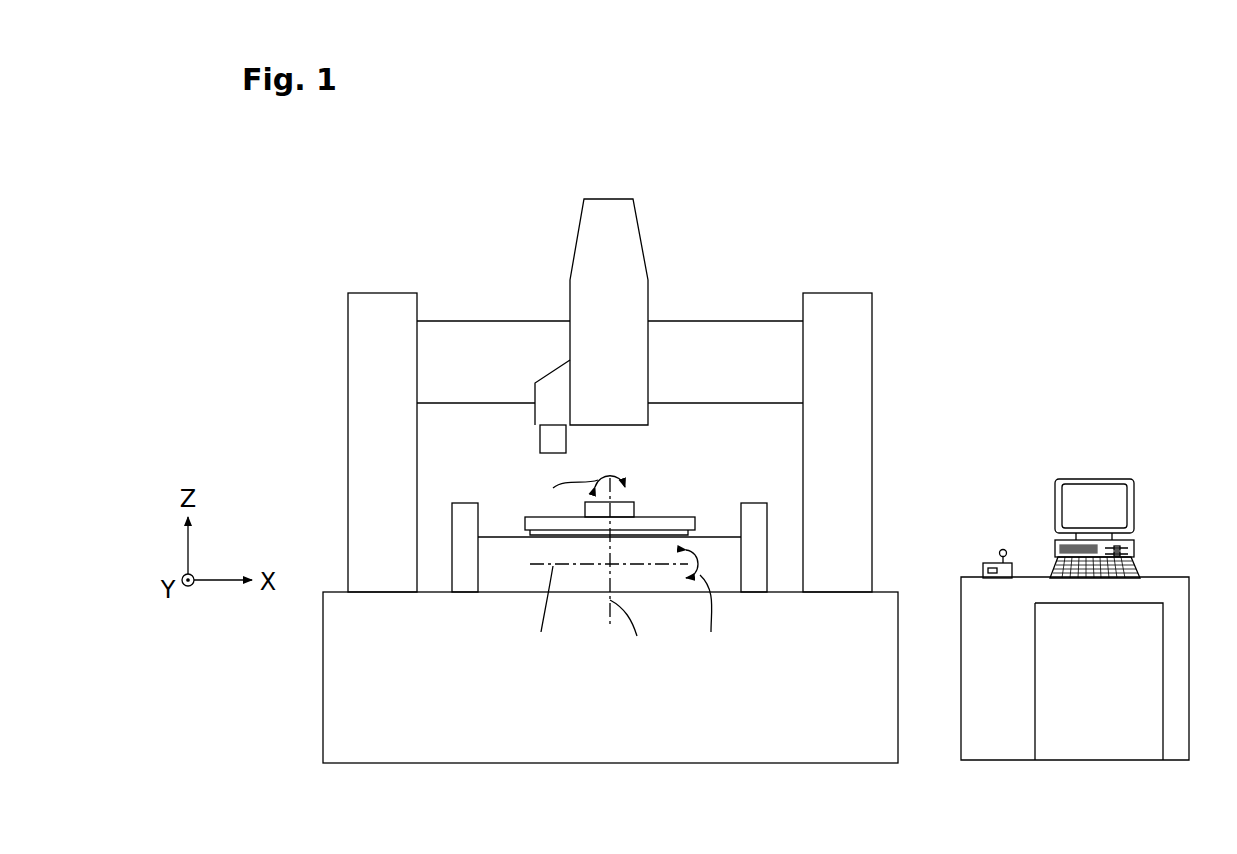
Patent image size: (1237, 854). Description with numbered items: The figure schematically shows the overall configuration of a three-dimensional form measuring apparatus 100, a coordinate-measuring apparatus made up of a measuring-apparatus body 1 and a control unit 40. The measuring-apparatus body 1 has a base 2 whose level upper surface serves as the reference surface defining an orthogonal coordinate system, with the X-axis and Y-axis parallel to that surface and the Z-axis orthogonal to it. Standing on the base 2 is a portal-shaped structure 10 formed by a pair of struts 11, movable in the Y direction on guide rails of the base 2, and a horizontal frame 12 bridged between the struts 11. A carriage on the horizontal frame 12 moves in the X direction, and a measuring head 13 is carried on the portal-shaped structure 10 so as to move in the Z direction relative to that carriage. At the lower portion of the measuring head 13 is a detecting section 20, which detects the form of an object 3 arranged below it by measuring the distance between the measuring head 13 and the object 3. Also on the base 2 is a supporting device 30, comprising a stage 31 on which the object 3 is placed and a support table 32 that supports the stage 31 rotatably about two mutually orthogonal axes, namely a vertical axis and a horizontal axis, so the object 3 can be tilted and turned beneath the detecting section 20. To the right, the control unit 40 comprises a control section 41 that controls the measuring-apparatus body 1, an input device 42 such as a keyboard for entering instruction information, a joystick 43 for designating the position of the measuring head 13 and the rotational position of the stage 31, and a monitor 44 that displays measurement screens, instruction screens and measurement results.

The three-dimensional form measuring apparatus 100 is at (977, 144).
The measuring-apparatus body 1 is at (812, 206).
The base 2 is at (338, 686).
The object 3 is at (632, 508).
The portal-shaped structure 10 is at (840, 292).
The struts 11 is at (360, 460).
The horizontal frame 12 is at (720, 330).
The measuring head 13 is at (628, 238).
The detecting section 20 is at (546, 440).
The supporting device 30 is at (722, 487).
The stage 31 is at (680, 523).
The support table 32 is at (717, 548).
The control unit 40 is at (1156, 448).
The control section 41 is at (1138, 547).
The input device 42 is at (1140, 566).
The joystick 43 is at (992, 562).
The monitor 44 is at (1135, 492).